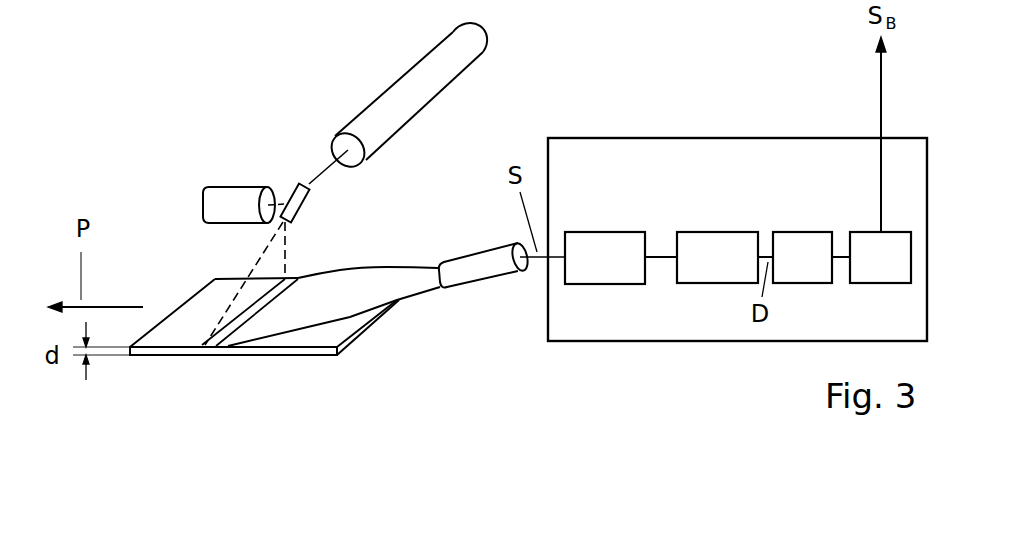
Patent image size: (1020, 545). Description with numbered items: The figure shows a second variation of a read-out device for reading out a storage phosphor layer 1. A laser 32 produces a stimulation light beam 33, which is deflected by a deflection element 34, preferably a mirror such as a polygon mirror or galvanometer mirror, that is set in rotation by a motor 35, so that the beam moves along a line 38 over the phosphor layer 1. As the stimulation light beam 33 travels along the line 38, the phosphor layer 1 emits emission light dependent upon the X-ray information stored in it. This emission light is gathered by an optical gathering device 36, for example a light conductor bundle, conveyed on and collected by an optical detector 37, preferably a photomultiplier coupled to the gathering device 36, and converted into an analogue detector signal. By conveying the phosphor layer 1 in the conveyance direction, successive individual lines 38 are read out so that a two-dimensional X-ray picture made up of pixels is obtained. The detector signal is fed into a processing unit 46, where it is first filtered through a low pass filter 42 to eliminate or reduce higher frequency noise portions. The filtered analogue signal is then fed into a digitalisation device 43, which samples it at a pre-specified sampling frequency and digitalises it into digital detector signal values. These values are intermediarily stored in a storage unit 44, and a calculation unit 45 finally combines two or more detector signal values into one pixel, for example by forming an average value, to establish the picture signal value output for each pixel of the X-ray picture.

The phosphor layer 1 is at (157, 358).
The laser 32 is at (388, 85).
The stimulation light beam 33 is at (325, 168).
The deflection element 34 is at (295, 181).
The motor 35 is at (212, 186).
The optical gathering device 36 is at (340, 270).
The optical detector 37 is at (487, 248).
The line 38 is at (242, 307).
The low pass filter 42 is at (600, 228).
The digitalisation device 43 is at (712, 228).
The storage unit 44 is at (803, 228).
The calculation unit 45 is at (890, 228).
The processing unit 46 is at (583, 143).